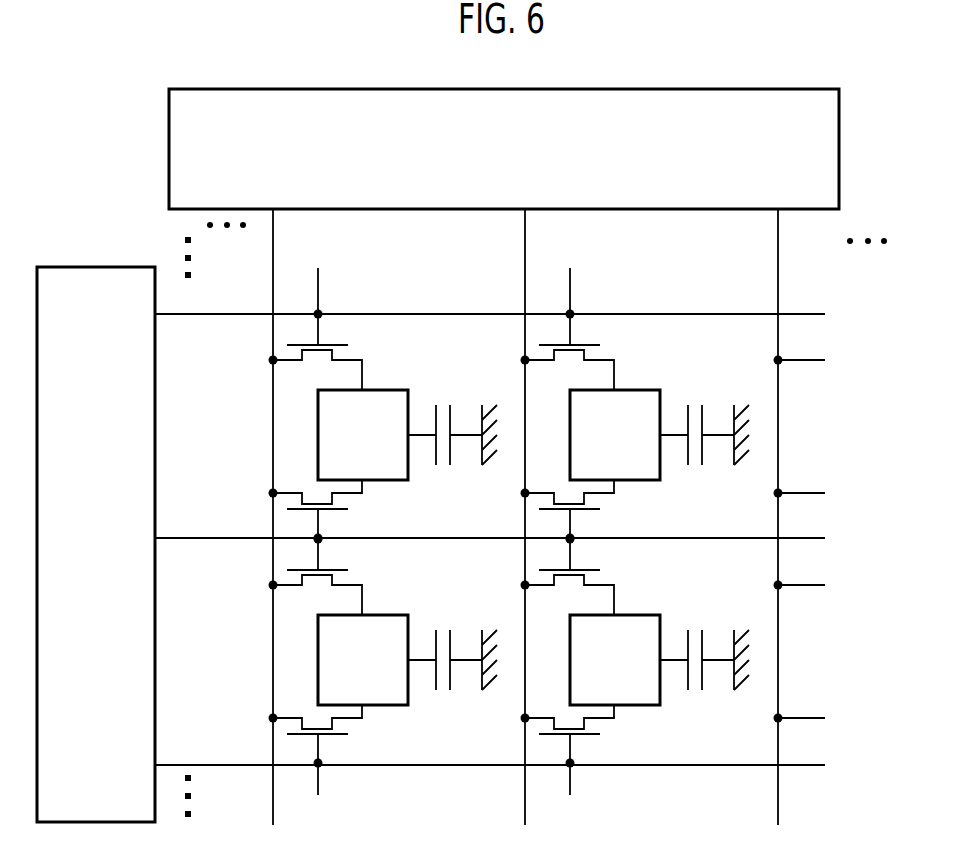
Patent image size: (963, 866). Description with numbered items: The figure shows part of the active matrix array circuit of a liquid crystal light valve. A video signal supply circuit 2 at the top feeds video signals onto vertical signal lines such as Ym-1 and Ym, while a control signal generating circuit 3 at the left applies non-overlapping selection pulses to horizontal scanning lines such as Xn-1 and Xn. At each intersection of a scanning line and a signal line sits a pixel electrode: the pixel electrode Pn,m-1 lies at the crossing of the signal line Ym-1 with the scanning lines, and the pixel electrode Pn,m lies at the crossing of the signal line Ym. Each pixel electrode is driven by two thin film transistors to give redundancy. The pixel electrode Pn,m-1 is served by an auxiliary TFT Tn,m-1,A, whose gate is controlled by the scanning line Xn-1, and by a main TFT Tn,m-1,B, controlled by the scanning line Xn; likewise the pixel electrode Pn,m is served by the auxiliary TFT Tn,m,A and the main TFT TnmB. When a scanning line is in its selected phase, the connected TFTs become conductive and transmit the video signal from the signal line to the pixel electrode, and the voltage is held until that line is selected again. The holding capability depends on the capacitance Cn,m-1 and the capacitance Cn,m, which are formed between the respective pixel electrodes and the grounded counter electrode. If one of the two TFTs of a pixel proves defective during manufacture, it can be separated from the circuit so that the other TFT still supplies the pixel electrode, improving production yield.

The video signal supply circuit 2 is at (663, 88).
The control signal generating circuit 3 is at (117, 268).
The scanning line Xn-1 is at (490, 291).
The scanning line Xn is at (490, 523).
The signal line Ym-1 is at (295, 517).
The signal line Ym is at (541, 517).
The auxiliary TFT Tn,m-1,A is at (351, 350).
The main TFT Tn,m-1,B is at (355, 511).
The pixel electrode Pn,m-1 is at (363, 435).
The capacitance Cn,m-1 is at (452, 422).
The auxiliary TFT Tn,m,A is at (597, 350).
The main TFT TnmB is at (595, 511).
The pixel electrode Pn,m is at (615, 435).
The capacitance Cn,m is at (704, 422).